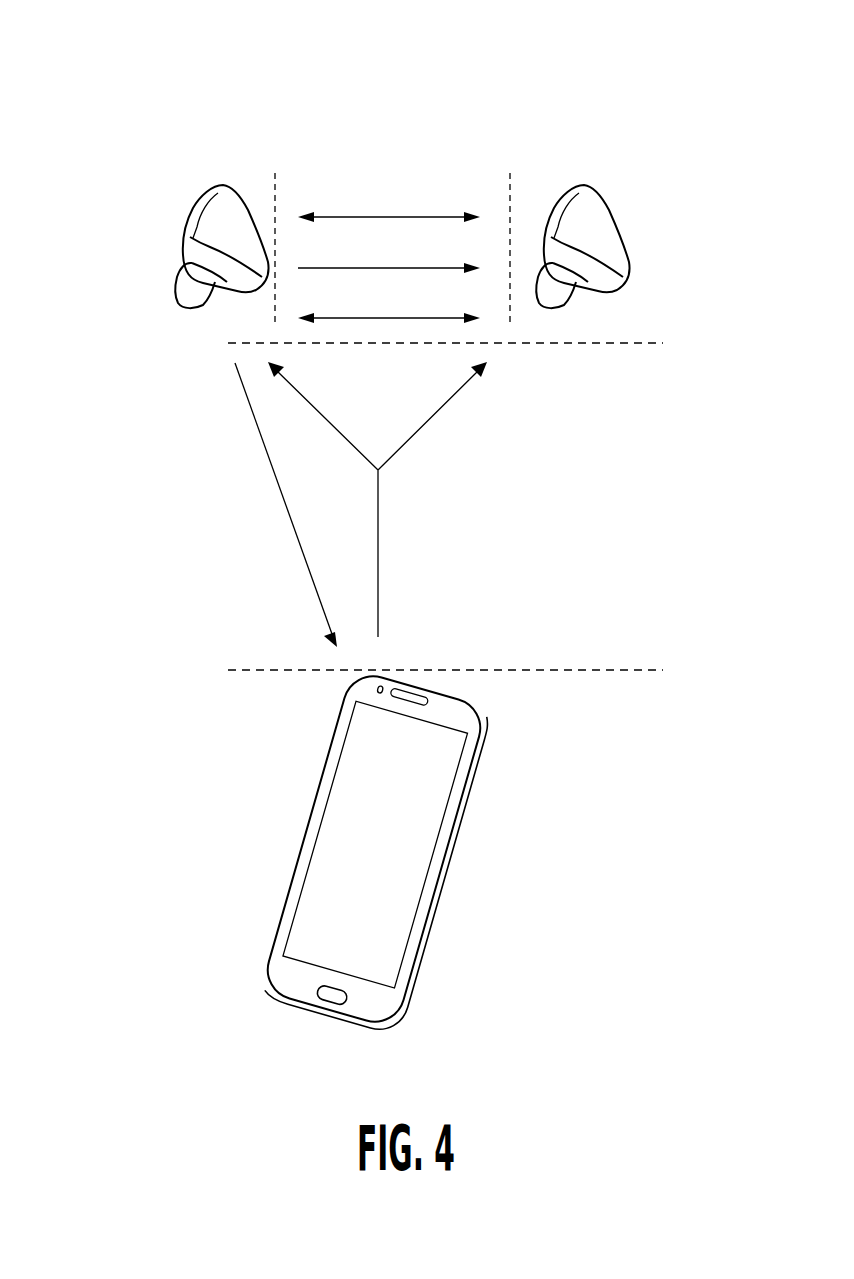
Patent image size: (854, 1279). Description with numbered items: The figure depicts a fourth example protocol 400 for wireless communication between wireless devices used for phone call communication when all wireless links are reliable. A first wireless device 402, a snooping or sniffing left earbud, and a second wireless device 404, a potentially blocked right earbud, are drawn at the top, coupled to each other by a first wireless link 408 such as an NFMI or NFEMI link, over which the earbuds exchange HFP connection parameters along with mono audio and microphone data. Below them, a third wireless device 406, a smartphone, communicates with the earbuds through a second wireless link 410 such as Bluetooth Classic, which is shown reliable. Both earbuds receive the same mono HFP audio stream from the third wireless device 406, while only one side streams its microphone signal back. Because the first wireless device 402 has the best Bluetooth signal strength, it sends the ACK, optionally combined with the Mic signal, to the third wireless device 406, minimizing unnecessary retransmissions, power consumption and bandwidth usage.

The fourth example protocol 400 is at (110, 92).
The first wireless device 402 is at (182, 230).
The second wireless device 404 is at (618, 233).
The third wireless device 406 is at (428, 915).
The first wireless link 408 is at (510, 162).
The second wireless link 410 is at (663, 343).